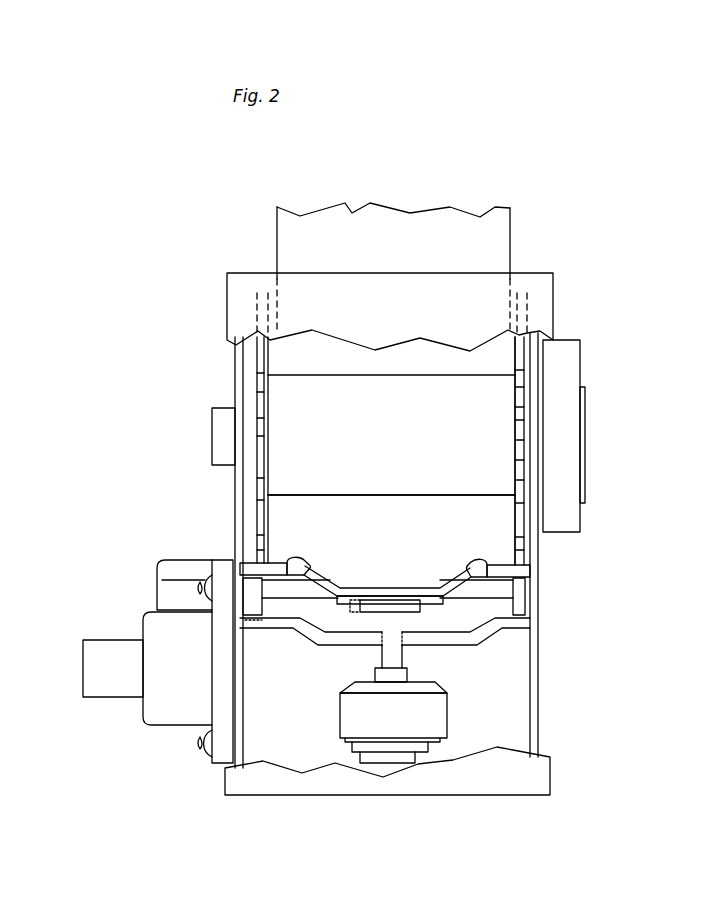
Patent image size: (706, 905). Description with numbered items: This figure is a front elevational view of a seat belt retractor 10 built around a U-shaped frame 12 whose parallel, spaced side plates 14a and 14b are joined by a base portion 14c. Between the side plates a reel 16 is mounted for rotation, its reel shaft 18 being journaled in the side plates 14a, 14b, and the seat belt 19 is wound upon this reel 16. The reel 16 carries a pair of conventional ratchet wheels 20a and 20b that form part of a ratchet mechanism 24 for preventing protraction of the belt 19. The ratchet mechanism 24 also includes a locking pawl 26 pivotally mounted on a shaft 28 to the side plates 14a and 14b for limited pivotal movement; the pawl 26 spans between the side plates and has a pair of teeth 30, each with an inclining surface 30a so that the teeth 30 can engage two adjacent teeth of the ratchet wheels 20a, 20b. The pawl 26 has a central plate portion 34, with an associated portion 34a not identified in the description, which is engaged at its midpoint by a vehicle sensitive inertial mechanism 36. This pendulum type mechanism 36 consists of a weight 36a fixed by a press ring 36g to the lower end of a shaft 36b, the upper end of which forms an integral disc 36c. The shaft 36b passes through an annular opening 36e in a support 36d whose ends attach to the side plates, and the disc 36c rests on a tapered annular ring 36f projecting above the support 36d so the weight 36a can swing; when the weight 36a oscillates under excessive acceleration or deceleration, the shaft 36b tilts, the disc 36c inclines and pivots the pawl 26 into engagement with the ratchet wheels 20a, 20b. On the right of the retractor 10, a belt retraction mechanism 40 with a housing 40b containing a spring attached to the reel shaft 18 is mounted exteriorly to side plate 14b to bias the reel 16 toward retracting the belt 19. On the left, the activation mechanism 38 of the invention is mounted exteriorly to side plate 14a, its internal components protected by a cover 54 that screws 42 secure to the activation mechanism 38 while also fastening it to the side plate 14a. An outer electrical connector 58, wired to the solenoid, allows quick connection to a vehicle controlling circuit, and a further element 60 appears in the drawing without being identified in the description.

The seat belt retractor 10 is at (538, 258).
The U-shaped frame 12 is at (546, 350).
The side plate 14a is at (236, 357).
The side plate 14b is at (540, 433).
The base portion 14c is at (512, 718).
The reel 16 is at (397, 410).
The reel shaft 18 is at (212, 447).
The seat belt 19 is at (426, 240).
The ratchet wheel 20a is at (258, 394).
The ratchet wheel 20b is at (521, 462).
The ratchet mechanism 24 is at (512, 555).
The locking pawl 26 is at (428, 577).
The shaft 28 is at (490, 593).
The teeth 30 is at (282, 563).
The inclining surface 30a is at (330, 567).
The central plate portion 34 is at (380, 572).
The diaphragm hub 34a is at (422, 605).
The inertial mechanism 36 is at (448, 690).
The weight 36a is at (360, 712).
The shaft 36b is at (385, 668).
The disc 36c is at (364, 606).
The support 36d is at (322, 636).
The annular opening 36e is at (385, 648).
The tapered annular ring 36f is at (458, 640).
The press ring 36g is at (420, 745).
The activation mechanism 38 is at (152, 598).
The belt retraction mechanism 40 is at (584, 506).
The housing 40b is at (566, 526).
The screws 42 is at (203, 588).
The cover 54 is at (143, 718).
The electrical connector 58 is at (83, 681).
The actuator 60 is at (7, 521).